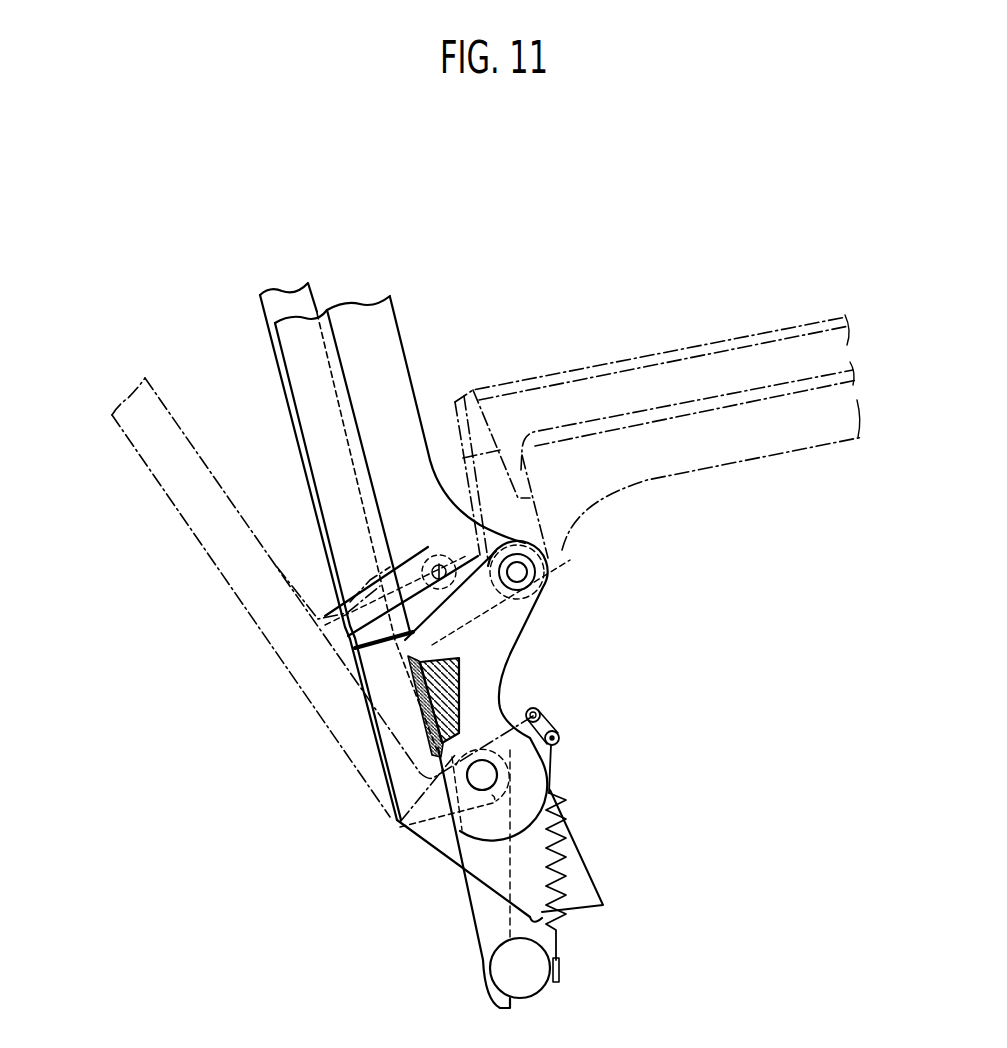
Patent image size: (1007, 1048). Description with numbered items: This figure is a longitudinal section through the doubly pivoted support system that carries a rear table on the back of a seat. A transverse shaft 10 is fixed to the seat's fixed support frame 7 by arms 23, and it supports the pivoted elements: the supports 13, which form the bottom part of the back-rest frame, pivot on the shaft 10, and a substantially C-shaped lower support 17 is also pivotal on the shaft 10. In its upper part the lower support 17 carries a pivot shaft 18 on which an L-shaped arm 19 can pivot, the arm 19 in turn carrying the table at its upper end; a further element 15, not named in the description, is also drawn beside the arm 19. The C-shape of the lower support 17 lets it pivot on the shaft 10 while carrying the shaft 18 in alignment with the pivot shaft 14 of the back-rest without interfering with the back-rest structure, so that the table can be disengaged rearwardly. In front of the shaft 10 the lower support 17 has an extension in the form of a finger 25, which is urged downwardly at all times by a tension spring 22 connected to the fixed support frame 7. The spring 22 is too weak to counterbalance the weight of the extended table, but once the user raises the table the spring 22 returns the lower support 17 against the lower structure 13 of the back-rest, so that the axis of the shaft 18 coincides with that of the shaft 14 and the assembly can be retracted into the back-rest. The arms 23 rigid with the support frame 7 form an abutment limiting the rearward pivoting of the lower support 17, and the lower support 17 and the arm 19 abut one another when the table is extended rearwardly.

The fixed support frame 7 is at (530, 987).
The transverse shaft 10 is at (482, 775).
The supports 13 is at (511, 653).
The pivot shaft of the back-rest 14 is at (549, 576).
The frame tube 15 is at (660, 327).
The C-shaped lower support 17 is at (330, 745).
The pivot shaft 18 is at (440, 557).
The L-shaped arm 19 is at (317, 452).
The tension spring 22 is at (573, 862).
The arms 23 is at (485, 924).
The finger 25 is at (560, 744).